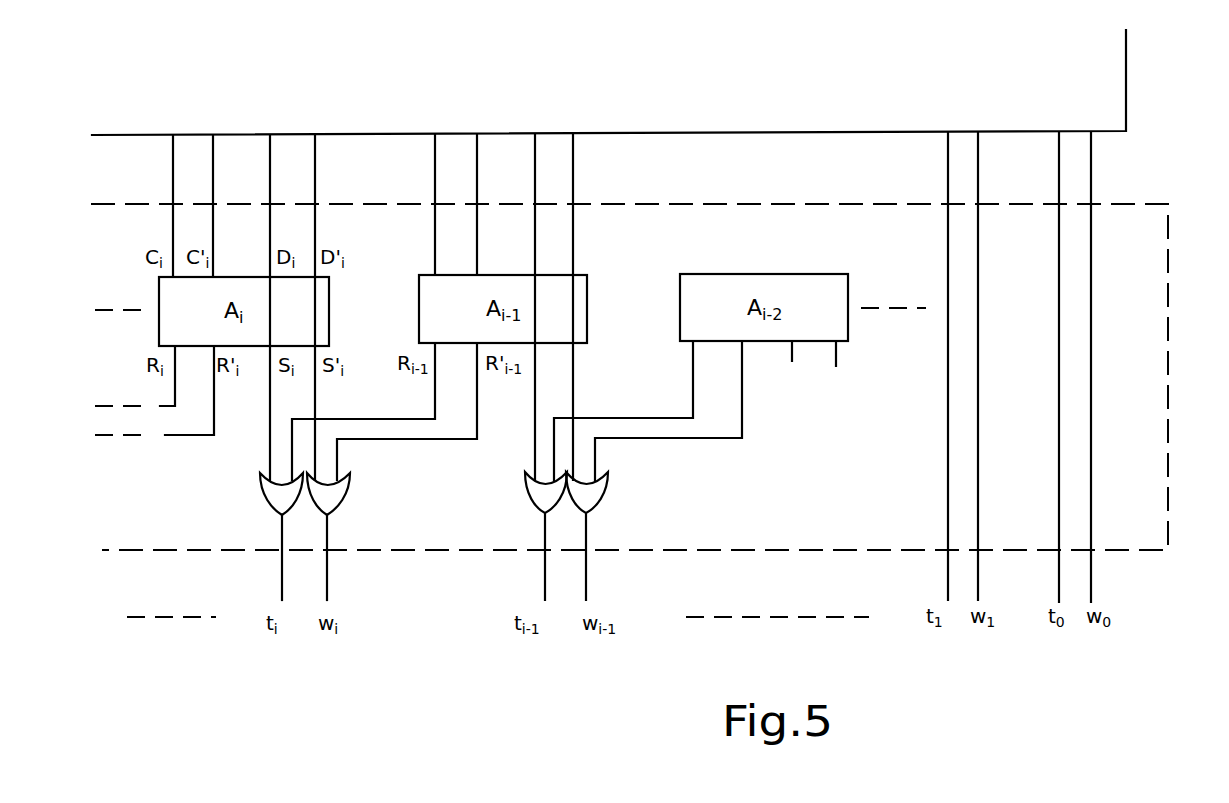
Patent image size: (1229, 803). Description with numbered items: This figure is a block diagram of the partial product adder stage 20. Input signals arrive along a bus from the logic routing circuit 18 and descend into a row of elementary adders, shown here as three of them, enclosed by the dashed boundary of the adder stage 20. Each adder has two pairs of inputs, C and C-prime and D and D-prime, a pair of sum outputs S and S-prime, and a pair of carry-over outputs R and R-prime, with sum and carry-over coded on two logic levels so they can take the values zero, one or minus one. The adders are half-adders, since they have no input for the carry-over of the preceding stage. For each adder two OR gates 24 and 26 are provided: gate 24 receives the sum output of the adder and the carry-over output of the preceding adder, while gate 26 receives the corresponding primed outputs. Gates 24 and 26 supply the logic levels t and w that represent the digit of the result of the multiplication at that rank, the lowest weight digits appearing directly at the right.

The logic routing circuit 18 is at (1127, 95).
The adder stage 20 is at (1170, 252).
The OR gate 24 is at (263, 498).
The OR gate 26 is at (349, 497).